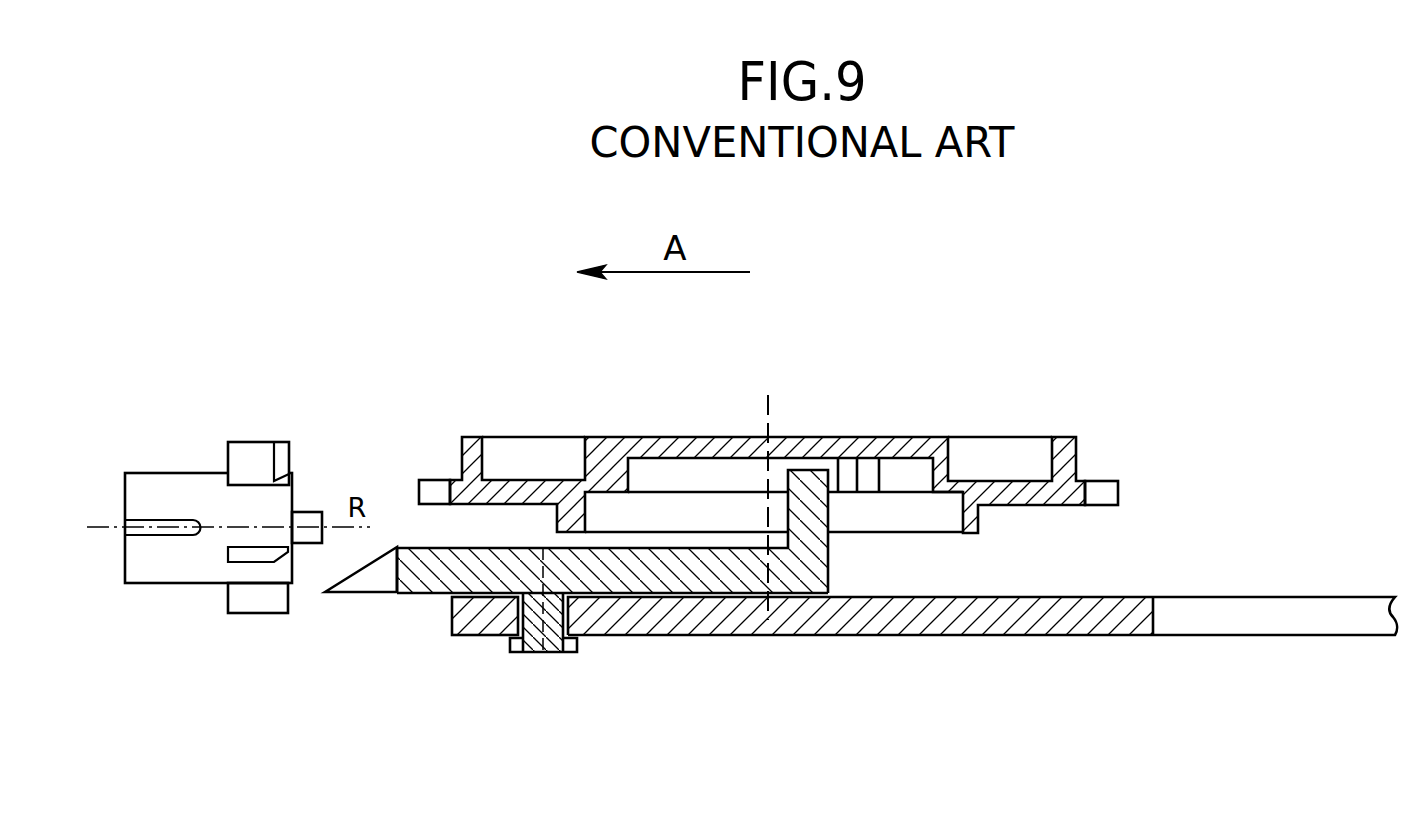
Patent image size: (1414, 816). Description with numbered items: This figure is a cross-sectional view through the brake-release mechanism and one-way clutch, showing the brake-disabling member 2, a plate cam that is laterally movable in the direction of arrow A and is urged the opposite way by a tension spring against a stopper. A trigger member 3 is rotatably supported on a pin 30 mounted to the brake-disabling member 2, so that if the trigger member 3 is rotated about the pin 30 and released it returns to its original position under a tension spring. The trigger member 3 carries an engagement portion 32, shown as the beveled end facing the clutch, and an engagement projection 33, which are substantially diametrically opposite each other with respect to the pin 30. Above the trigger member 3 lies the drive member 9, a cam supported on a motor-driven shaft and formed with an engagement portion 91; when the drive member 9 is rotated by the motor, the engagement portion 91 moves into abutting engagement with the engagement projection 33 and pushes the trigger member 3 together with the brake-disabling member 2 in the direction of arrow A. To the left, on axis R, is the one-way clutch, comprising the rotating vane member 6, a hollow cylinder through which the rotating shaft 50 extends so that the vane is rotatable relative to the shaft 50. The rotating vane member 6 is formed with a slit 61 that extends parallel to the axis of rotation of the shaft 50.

The brake-disabling member 2 is at (1112, 625).
The trigger member 3 is at (707, 593).
The rotating vane member 6 is at (190, 567).
The drive member 9 is at (703, 445).
The pin 30 is at (547, 653).
The engagement portion 32 is at (365, 582).
The engagement projection 33 is at (812, 474).
The rotating shaft 50 is at (317, 510).
The slit 61 is at (151, 518).
The engagement portion 91 is at (867, 467).